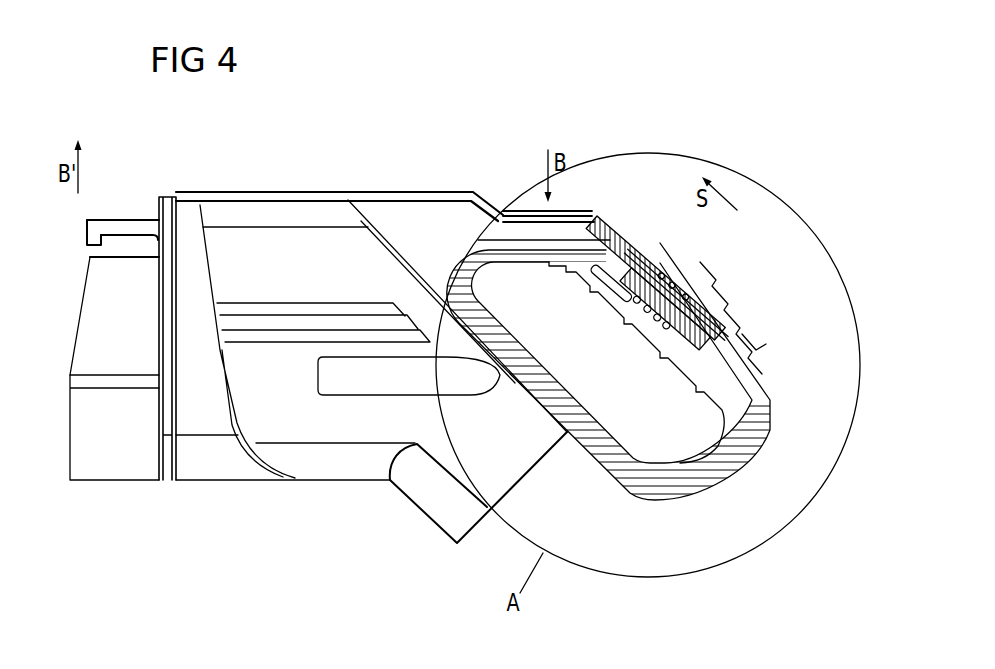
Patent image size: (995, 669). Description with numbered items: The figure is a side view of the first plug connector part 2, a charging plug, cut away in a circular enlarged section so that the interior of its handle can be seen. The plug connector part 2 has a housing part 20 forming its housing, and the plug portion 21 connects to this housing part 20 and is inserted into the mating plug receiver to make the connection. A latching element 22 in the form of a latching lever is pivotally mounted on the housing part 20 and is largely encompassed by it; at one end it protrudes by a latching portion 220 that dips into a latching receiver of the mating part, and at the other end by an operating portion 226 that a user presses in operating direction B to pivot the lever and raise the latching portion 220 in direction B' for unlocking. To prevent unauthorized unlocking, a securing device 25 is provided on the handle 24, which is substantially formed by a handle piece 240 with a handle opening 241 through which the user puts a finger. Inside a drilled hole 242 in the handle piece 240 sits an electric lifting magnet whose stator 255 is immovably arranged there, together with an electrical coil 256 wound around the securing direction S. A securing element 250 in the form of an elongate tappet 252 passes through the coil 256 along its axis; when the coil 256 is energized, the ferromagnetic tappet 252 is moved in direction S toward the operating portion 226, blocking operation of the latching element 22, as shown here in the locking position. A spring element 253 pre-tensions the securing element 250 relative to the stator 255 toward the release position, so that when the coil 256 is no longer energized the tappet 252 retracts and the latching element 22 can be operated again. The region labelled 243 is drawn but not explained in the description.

The first plug connector part 2 is at (316, 175).
The housing part 20 is at (342, 463).
The plug portion 21 is at (115, 463).
The latching element 22 is at (122, 227).
The latching portion 220 is at (90, 237).
The operating portion 226 is at (578, 208).
The handle 24 is at (652, 510).
The handle piece 240 is at (732, 312).
The handle opening 241 is at (683, 438).
The drilled hole 242 is at (758, 344).
The spring element 243 is at (633, 253).
The securing device 25 is at (691, 320).
The securing element 250 is at (652, 267).
The tappet 252 is at (610, 230).
The spring element 253 is at (697, 347).
The stator 255 is at (715, 297).
The electrical coil 256 is at (660, 333).